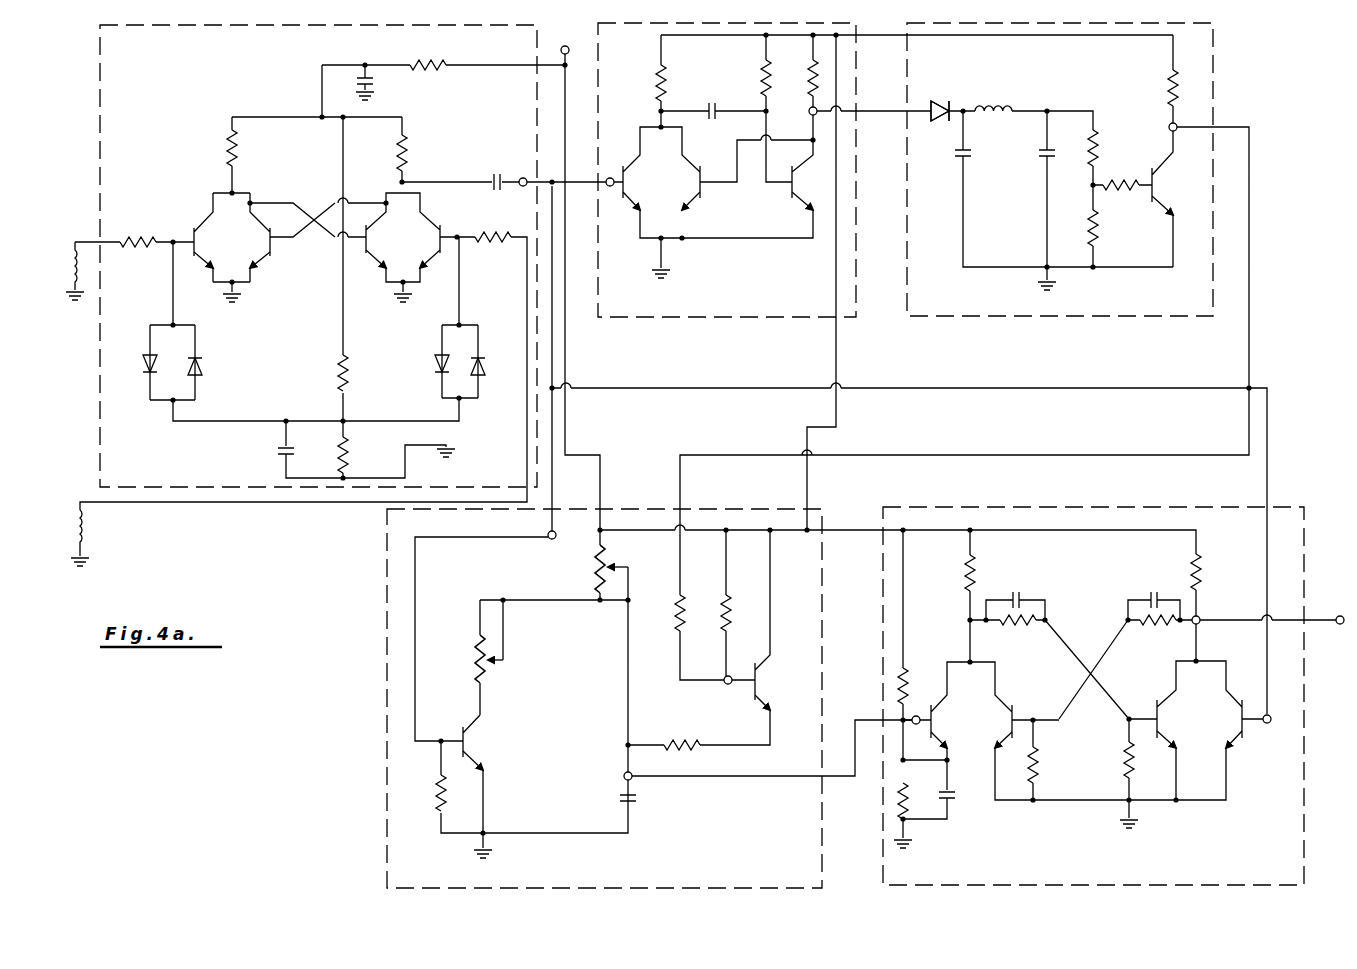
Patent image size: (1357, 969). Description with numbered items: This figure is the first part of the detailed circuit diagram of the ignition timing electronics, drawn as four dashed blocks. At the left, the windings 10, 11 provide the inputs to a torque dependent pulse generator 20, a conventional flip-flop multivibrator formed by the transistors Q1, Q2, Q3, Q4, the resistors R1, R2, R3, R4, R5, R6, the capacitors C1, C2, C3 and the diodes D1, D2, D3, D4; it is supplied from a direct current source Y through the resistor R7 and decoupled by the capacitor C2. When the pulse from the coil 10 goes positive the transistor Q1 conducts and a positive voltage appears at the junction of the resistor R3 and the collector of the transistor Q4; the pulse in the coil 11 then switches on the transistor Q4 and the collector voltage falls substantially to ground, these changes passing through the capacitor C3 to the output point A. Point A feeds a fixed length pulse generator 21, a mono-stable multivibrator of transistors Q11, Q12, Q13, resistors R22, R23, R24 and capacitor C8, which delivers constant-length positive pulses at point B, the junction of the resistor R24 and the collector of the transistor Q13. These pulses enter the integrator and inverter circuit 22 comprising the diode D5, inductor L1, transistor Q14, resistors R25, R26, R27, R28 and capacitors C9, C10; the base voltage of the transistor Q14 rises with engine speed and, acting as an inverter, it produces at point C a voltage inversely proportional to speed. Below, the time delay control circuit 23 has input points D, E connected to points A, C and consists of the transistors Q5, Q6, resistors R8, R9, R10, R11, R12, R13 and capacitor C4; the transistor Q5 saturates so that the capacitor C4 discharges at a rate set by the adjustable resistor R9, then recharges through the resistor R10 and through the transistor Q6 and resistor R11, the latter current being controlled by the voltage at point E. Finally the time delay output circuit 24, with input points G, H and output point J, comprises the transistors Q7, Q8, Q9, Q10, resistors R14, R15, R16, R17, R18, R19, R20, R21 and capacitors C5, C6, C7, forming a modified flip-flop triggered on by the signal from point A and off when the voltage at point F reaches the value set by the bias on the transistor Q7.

The winding 10 is at (70, 256).
The winding 11 is at (88, 535).
The torque dependent pulse generator 20 is at (100, 40).
The fixed length pulse generator 21 is at (724, 318).
The integrator and inverter circuit 22 is at (979, 316).
The time delay control circuit 23 is at (386, 742).
The time delay output circuit 24 is at (1286, 507).
The resistor R1 is at (138, 231).
The resistor R2 is at (245, 148).
The resistor R3 is at (416, 153).
The resistor R4 is at (493, 248).
The resistor R5 is at (327, 373).
The resistor R6 is at (356, 455).
The resistor R7 is at (428, 55).
The resistor R8 is at (425, 793).
The adjustable resistor R9 is at (463, 659).
The resistor R10 is at (580, 569).
The resistor R11 is at (682, 734).
The resistor R12 is at (746, 613).
The resistor R13 is at (662, 613).
The resistor R14 is at (903, 686).
The resistor R15 is at (903, 800).
The resistor R16 is at (950, 573).
The resistor R17 is at (1018, 631).
The resistor R18 is at (1155, 631).
The resistor R19 is at (1215, 570).
The resistor R20 is at (1052, 765).
The resistor R21 is at (1148, 760).
The resistor R22 is at (641, 83).
The resistor R23 is at (747, 69).
The resistor R24 is at (797, 78).
The resistor R25 is at (1112, 148).
The resistor R26 is at (1113, 228).
The resistor R27 is at (1121, 194).
The resistor R28 is at (1152, 88).
The capacitor C1 is at (274, 450).
The capacitor C2 is at (377, 84).
The capacitor C3 is at (493, 172).
The capacitor C4 is at (641, 802).
The capacitor C5 is at (960, 798).
The capacitor C6 is at (1015, 587).
The capacitor C7 is at (1149, 587).
The capacitor C8 is at (707, 99).
The capacitor C9 is at (976, 154).
The capacitor C10 is at (1063, 160).
The diode D1 is at (136, 371).
The diode D2 is at (210, 370).
The diode D3 is at (422, 371).
The diode D4 is at (494, 362).
The diode D5 is at (940, 97).
The inductor L1 is at (993, 97).
The transistor Q1 is at (193, 237).
The transistor Q2 is at (274, 237).
The transistor Q3 is at (366, 237).
The transistor Q4 is at (440, 237).
The transistor Q5 is at (488, 758).
The transistor Q6 is at (778, 637).
The transistor Q7 is at (952, 711).
The transistor Q8 is at (1017, 731).
The transistor Q9 is at (1153, 730).
The transistor Q10 is at (1244, 730).
The transistor Q11 is at (620, 182).
The transistor Q12 is at (702, 182).
The transistor Q13 is at (791, 189).
The transistor Q14 is at (1179, 199).
The output point A is at (523, 177).
The output point B is at (809, 116).
The output point C is at (1168, 128).
The input point D is at (552, 540).
The input point E is at (728, 684).
The point F is at (624, 774).
The input point G is at (1267, 723).
The input point H is at (920, 716).
The output point J is at (1201, 616).
The direct current source Y is at (565, 46).